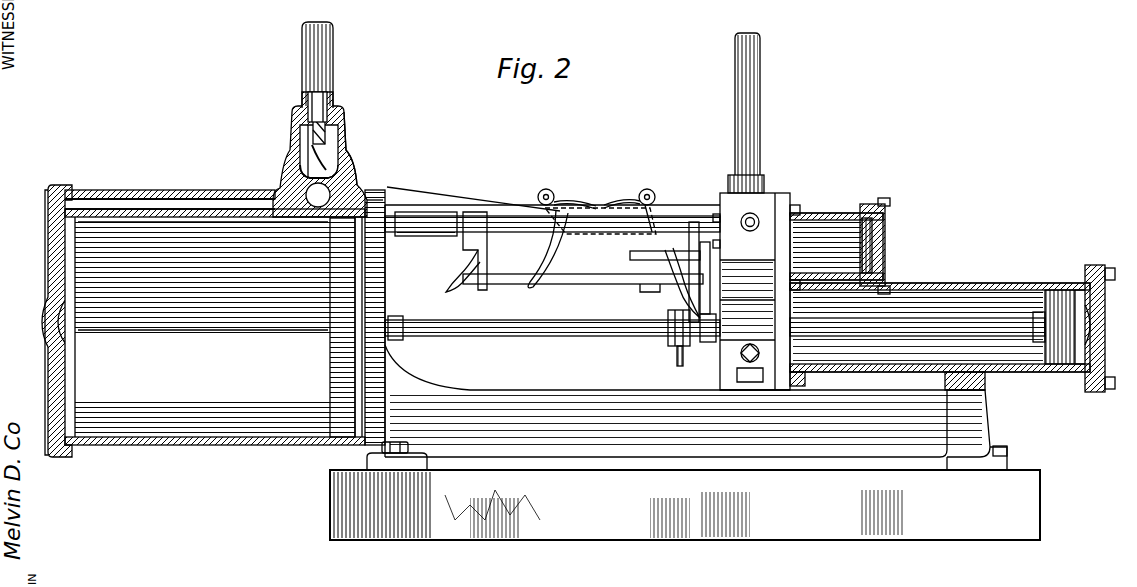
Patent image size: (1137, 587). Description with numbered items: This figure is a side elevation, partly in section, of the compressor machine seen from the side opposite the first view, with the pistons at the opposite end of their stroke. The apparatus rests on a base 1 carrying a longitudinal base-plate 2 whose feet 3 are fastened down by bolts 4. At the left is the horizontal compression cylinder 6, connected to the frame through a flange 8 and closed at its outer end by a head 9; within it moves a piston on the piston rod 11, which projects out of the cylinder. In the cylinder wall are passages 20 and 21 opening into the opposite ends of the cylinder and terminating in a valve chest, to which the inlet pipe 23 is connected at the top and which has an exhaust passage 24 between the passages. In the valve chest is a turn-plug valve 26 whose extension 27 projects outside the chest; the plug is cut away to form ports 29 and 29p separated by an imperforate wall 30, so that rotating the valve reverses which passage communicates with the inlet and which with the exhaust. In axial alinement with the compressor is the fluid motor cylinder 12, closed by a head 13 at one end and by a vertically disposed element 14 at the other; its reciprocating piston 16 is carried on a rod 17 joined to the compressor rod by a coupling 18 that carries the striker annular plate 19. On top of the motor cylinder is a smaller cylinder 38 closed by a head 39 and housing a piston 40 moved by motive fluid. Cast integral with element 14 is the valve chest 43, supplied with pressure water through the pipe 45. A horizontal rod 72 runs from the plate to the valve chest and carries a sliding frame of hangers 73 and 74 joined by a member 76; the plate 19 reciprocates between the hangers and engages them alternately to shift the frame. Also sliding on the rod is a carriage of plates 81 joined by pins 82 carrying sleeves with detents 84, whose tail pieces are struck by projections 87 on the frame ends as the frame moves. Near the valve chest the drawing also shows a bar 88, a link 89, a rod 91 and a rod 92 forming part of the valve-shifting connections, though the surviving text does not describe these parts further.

The base 1 is at (685, 505).
The base-plate 2 is at (700, 432).
The feet 3 is at (365, 463).
The bolts 4 is at (403, 436).
The compression cylinder 6 is at (200, 445).
The flange 8 is at (540, 256).
The head 9 is at (50, 285).
The piston rod 11 is at (492, 335).
The fluid motor cylinder 12 is at (952, 288).
The head 13 is at (1102, 340).
The vertically disposed element 14 is at (780, 200).
The reciprocating piston 16 is at (1055, 372).
The rod 17 is at (900, 336).
The coupling 18 is at (668, 346).
The annular plate 19 is at (663, 361).
The passage 20 is at (385, 196).
The passage 21 is at (176, 198).
The inlet pipe 23 is at (338, 52).
The exhaust passage 24 is at (296, 230).
The turn-plug valve 26 is at (343, 178).
The extension 27 is at (300, 172).
The port 29 is at (298, 162).
The port 29p is at (352, 150).
The imperforate wall 30 is at (312, 140).
The cylinder 38 is at (834, 213).
The head 39 is at (886, 243).
The piston 40 is at (890, 222).
The valve chest 43 is at (720, 368).
The pipe 45 is at (760, 123).
The horizontal rod 72 is at (448, 237).
The hanger 73 is at (648, 292).
The hanger 74 is at (478, 248).
The member 76 is at (573, 284).
The plates 81 is at (648, 189).
The pins 82 is at (546, 189).
The detent 84 is at (584, 202).
The projections 87 is at (478, 292).
The bar 88 is at (630, 256).
The link 89 is at (712, 278).
The rod 91 is at (460, 205).
The rod 92 is at (694, 222).